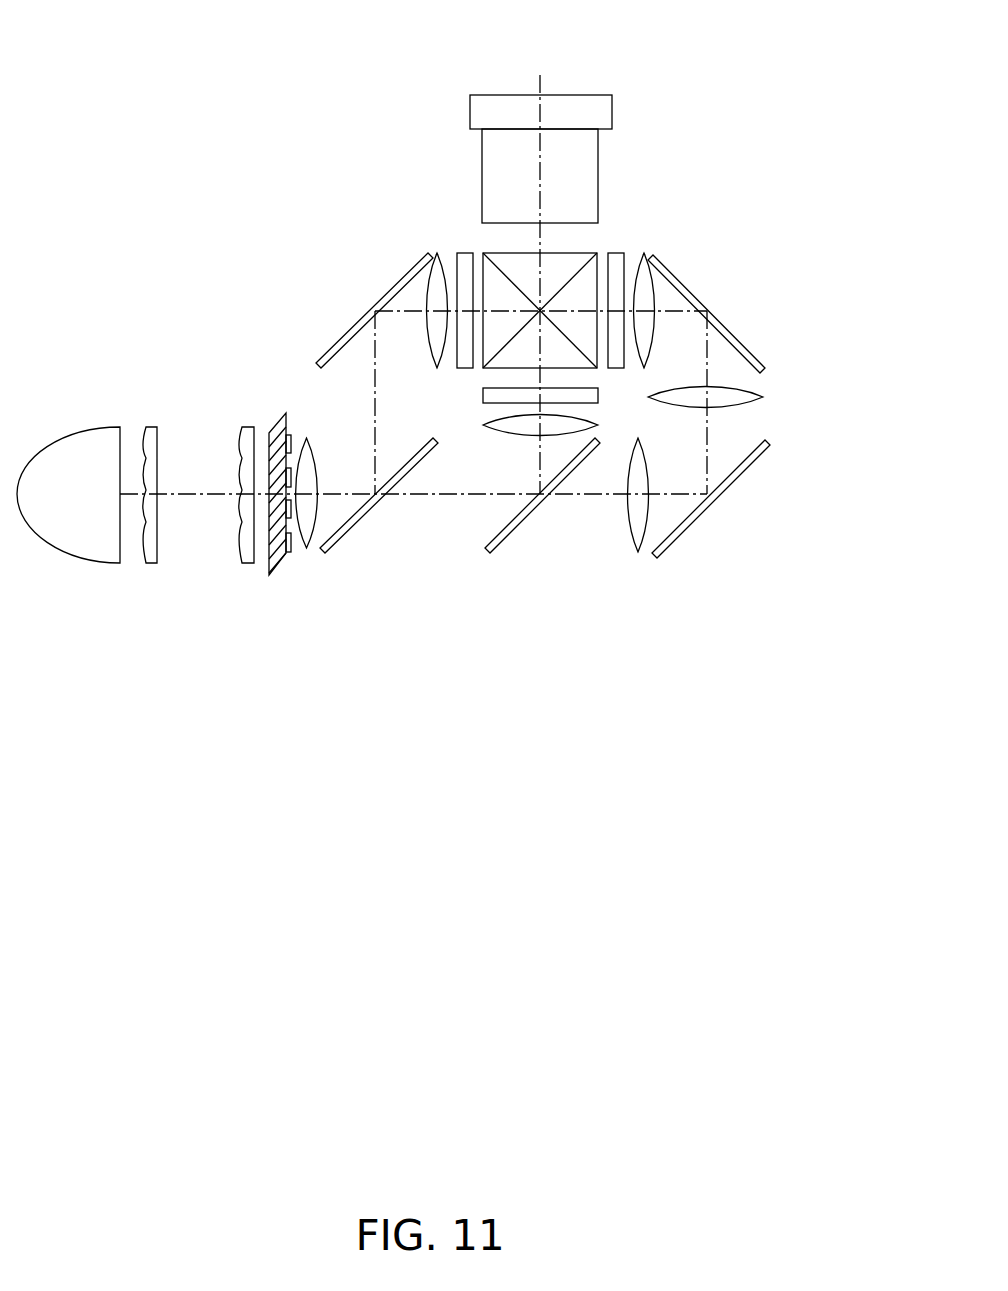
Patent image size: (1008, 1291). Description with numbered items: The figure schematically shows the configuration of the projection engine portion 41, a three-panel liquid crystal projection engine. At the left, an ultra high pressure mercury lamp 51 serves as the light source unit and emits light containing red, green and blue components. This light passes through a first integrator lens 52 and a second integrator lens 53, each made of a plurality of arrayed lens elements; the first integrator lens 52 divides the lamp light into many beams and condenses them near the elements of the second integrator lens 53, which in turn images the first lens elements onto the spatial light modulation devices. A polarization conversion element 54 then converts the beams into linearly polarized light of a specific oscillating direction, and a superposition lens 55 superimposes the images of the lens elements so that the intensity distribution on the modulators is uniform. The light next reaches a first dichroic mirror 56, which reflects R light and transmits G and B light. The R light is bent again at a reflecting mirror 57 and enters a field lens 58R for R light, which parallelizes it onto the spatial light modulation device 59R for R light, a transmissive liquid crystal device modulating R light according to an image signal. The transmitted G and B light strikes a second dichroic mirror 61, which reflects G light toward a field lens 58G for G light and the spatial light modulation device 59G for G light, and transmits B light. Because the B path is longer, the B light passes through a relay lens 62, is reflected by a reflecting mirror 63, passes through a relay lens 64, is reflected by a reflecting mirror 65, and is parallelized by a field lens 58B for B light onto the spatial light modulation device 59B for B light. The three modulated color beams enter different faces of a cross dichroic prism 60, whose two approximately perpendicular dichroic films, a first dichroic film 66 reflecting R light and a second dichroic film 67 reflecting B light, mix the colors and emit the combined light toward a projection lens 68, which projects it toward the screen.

The projection engine portion 41 is at (160, 72).
The ultra high pressure mercury lamp 51 is at (85, 560).
The first integrator lens 52 is at (152, 563).
The second integrator lens 53 is at (248, 563).
The polarization conversion element 54 is at (275, 575).
The superposition lens 55 is at (306, 548).
The first dichroic mirror 56 is at (338, 543).
The reflecting mirror 57 is at (397, 268).
The field lens for R light 58R is at (438, 253).
The field lens for G light 58G is at (493, 432).
The field lens for B light 58B is at (643, 256).
The spatial light modulation device for R light 59R is at (463, 253).
The spatial light modulation device for G light 59G is at (598, 400).
The spatial light modulation device for B light 59B is at (617, 253).
The cross dichroic prism 60 is at (488, 347).
The second dichroic mirror 61 is at (513, 530).
The relay lens 62 is at (638, 552).
The reflecting mirror 63 is at (725, 487).
The relay lens 64 is at (763, 397).
The reflecting mirror 65 is at (757, 350).
The first dichroic film 66 is at (585, 262).
The second dichroic film 67 is at (590, 355).
The projection lens 68 is at (612, 107).